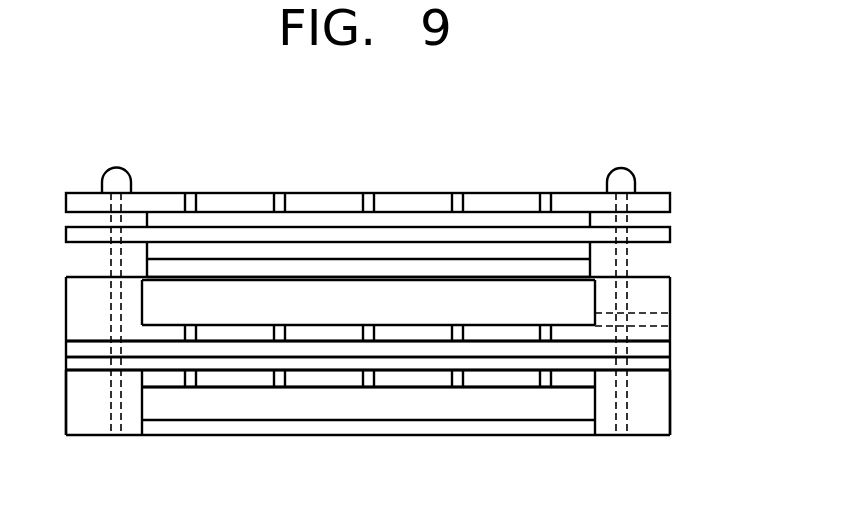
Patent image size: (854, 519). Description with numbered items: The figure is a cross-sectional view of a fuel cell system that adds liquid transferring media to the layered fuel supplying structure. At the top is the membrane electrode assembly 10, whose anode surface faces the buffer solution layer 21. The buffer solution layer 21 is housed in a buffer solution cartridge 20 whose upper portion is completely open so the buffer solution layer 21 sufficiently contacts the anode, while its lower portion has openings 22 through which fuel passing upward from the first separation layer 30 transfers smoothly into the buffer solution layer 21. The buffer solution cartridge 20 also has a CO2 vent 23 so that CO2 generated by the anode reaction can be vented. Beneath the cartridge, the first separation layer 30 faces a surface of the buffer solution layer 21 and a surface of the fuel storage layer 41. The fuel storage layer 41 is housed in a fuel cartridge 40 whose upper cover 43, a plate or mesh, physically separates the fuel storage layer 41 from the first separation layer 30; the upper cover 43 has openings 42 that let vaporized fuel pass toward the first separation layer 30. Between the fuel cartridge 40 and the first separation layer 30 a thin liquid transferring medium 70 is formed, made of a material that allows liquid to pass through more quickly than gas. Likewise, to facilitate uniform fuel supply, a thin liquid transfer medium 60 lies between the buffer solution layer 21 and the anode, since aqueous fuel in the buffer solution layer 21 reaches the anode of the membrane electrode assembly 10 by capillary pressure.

The membrane electrode assembly 10 is at (53, 213).
The buffer solution cartridge 20 is at (53, 278).
The buffer solution layer 21 is at (587, 293).
The openings 22 is at (552, 343).
The CO2 vent 23 is at (652, 320).
The first separation layer 30 is at (65, 349).
The fuel cartridge 40 is at (53, 370).
The fuel storage layer 41 is at (573, 413).
The openings 42 is at (551, 386).
The upper cover 43 is at (507, 390).
The liquid transfer medium 60 is at (583, 270).
The liquid transferring medium 70 is at (672, 368).